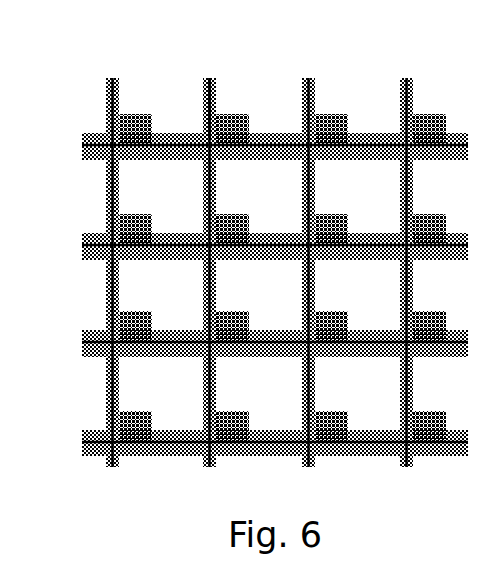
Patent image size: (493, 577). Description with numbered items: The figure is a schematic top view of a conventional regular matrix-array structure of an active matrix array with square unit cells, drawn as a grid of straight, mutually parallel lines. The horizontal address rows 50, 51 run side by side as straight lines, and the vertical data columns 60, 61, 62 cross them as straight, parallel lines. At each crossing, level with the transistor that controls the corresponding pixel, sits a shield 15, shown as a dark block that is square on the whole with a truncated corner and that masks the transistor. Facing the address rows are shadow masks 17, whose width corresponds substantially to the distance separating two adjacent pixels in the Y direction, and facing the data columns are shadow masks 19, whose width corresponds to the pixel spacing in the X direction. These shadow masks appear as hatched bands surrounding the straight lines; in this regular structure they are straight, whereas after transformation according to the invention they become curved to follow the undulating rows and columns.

The shield 15 is at (152, 117).
The shadow mask 17 is at (83, 160).
The shadow mask 19 is at (216, 94).
The address row 50 is at (87, 134).
The address row 51 is at (87, 234).
The data column 60 is at (120, 80).
The data column 61 is at (215, 80).
The data column 62 is at (313, 80).